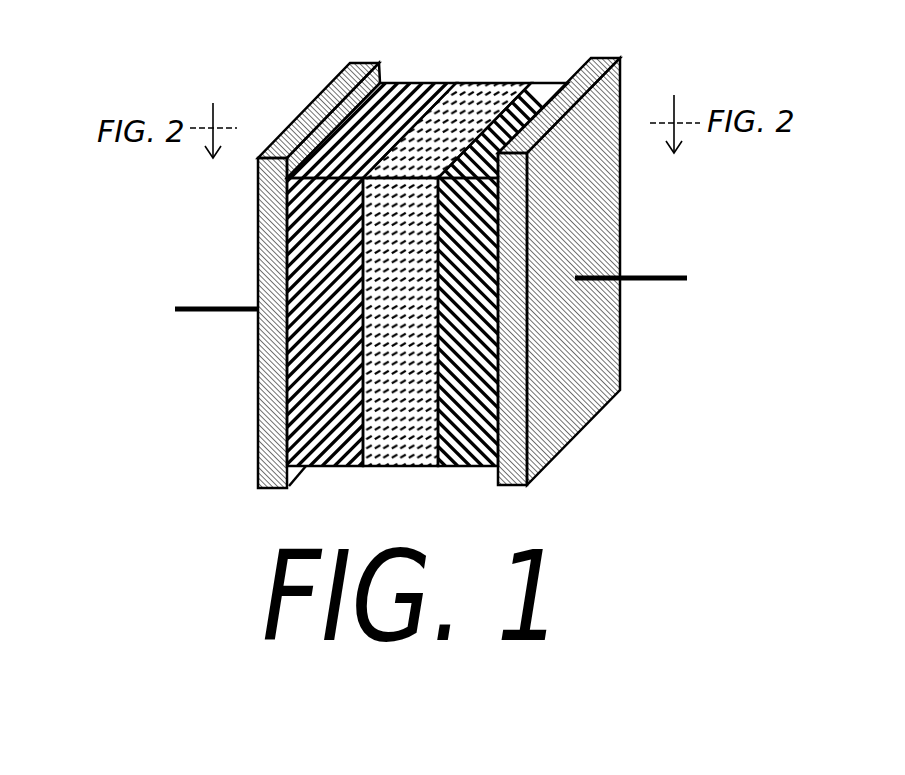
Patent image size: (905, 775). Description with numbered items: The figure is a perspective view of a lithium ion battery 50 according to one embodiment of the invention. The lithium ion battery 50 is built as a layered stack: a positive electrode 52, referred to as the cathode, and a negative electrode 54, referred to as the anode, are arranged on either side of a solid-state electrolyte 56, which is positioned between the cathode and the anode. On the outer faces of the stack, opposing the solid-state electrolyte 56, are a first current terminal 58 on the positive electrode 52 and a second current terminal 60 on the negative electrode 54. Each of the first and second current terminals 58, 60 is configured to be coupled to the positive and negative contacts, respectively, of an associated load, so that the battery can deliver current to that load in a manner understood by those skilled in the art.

The lithium ion battery 50 is at (242, 82).
The positive electrode 52 is at (407, 83).
The negative electrode 54 is at (542, 83).
The solid-state electrolyte 56 is at (492, 83).
The first current terminal 58 is at (268, 402).
The second current terminal 60 is at (580, 337).